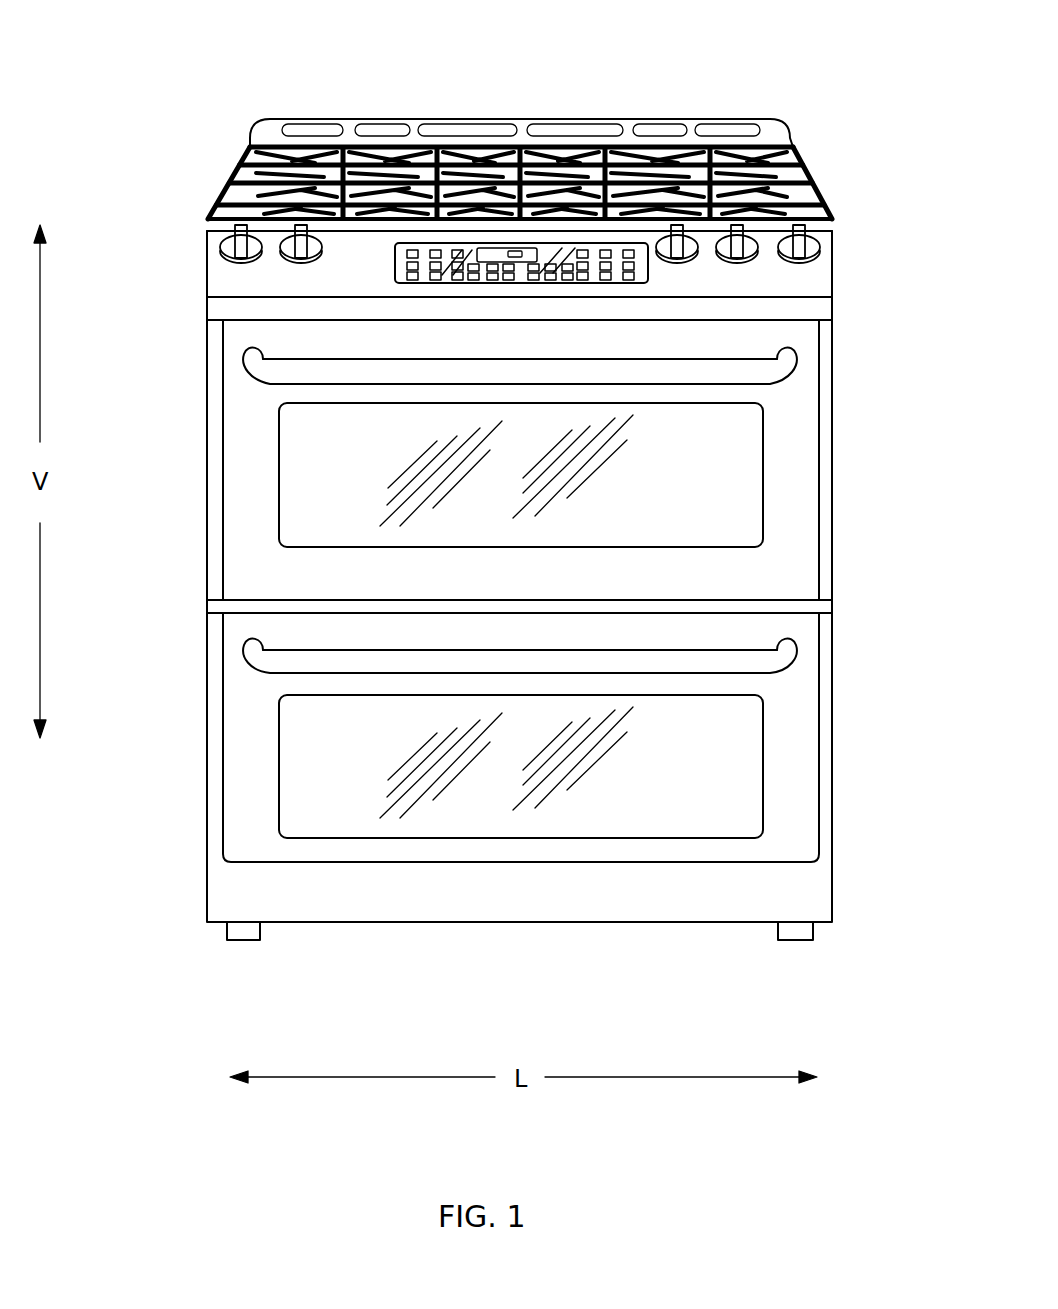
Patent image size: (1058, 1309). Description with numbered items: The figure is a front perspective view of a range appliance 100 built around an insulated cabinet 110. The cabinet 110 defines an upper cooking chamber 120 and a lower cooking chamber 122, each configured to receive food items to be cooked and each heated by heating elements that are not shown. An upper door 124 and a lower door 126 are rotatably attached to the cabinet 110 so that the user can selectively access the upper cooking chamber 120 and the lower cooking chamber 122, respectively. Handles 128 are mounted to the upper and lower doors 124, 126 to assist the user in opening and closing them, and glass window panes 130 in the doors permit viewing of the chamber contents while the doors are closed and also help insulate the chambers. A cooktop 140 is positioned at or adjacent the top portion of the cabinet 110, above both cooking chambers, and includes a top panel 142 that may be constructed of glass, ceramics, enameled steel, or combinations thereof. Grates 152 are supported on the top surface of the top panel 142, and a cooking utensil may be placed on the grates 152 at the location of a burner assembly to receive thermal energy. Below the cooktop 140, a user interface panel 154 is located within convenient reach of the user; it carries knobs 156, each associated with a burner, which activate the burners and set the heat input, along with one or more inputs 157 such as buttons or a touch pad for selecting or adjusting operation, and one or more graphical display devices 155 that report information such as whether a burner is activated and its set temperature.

The range appliance 100 is at (181, 125).
The cabinet 110 is at (693, 308).
The upper cooking chamber 120 is at (526, 469).
The lower cooking chamber 122 is at (514, 748).
The upper door 124 is at (215, 533).
The lower door 126 is at (215, 797).
The handle 128 is at (346, 372).
The glass window pane 130 is at (738, 522).
The cooktop 140 is at (791, 126).
The top panel 142 is at (834, 221).
The grate 152 is at (240, 196).
The user interface panel 154 is at (525, 239).
The graphical display device 155 is at (500, 250).
The knob 156 is at (292, 260).
The input 157 is at (474, 283).